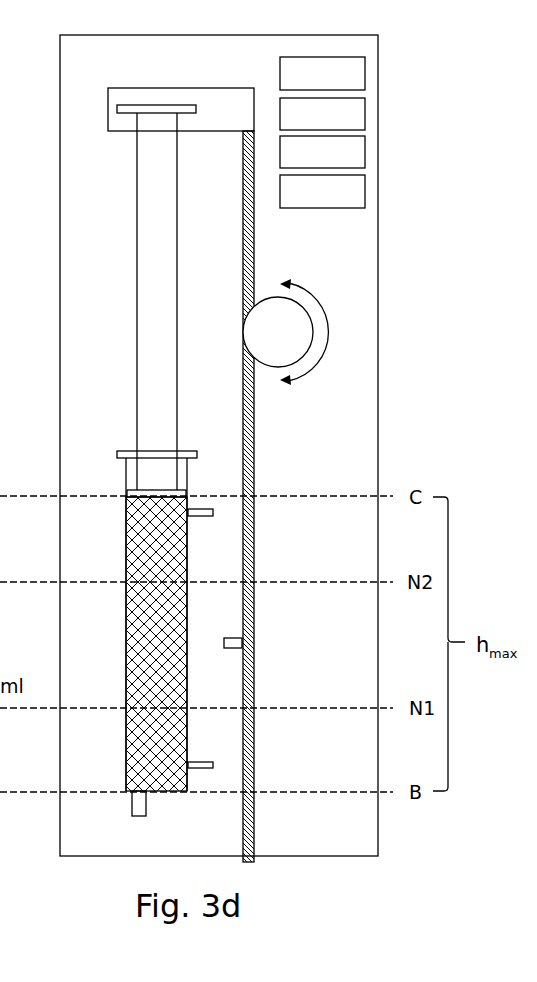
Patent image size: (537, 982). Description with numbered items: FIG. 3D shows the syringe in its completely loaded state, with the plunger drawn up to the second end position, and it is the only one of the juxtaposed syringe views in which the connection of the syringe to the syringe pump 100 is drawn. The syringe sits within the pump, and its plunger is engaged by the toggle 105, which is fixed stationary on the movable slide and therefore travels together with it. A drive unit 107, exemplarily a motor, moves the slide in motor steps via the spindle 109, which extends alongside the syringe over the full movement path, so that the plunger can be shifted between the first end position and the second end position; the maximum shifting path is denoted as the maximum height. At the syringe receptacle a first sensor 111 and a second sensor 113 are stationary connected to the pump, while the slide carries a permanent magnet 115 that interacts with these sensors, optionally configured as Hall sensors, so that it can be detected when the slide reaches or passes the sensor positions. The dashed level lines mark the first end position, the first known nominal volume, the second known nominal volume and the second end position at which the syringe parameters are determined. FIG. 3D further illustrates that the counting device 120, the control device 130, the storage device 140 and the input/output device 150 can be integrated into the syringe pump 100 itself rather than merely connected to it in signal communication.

The syringe pump 100 is at (396, 170).
The toggle 105 is at (133, 94).
The drive unit 107 is at (285, 332).
The spindle 109 is at (254, 244).
The first sensor 111 is at (203, 517).
The second sensor 113 is at (204, 761).
The permanent magnet 115 is at (243, 643).
The counting device 120 is at (322, 73).
The control device 130 is at (322, 114).
The storage device 140 is at (322, 152).
The input/output device 150 is at (322, 191).